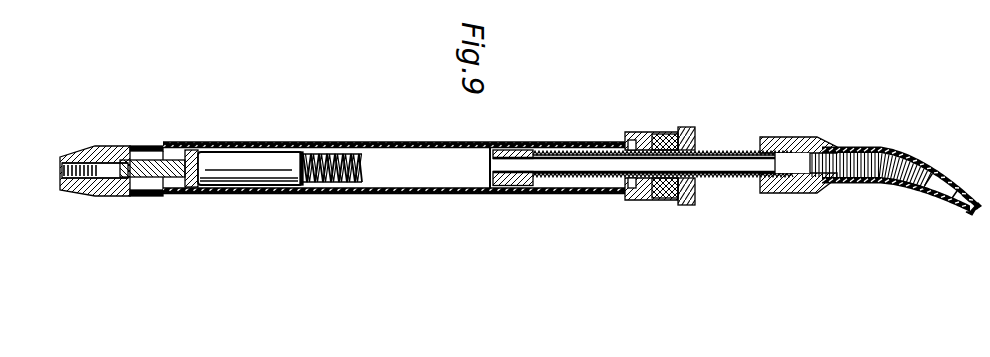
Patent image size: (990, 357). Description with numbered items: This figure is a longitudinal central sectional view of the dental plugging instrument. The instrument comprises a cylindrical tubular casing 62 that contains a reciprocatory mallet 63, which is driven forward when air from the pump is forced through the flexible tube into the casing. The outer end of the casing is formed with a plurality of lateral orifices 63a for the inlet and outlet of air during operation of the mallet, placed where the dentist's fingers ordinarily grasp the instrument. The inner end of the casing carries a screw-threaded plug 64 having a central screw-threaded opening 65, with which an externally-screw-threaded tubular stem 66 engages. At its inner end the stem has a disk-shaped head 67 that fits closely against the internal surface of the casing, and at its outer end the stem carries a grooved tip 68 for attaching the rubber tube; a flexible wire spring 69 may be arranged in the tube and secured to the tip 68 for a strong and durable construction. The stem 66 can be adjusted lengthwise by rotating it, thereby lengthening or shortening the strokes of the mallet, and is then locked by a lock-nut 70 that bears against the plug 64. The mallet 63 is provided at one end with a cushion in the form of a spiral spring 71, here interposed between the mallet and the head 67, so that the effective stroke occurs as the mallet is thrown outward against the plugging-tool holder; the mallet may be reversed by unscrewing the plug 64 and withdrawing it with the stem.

The tubular casing 62 is at (435, 193).
The reciprocatory mallet 63 is at (243, 168).
The lateral orifices 63a is at (147, 186).
The screw-threaded plug 64 is at (668, 199).
The central screw-threaded opening 65 is at (650, 200).
The tubular stem 66 is at (721, 178).
The disk-shaped head 67 is at (513, 193).
The tip 68 is at (800, 193).
The flexible wire spring 69 is at (881, 184).
The lock-nut 70 is at (690, 205).
The spiral spring 71 is at (350, 184).